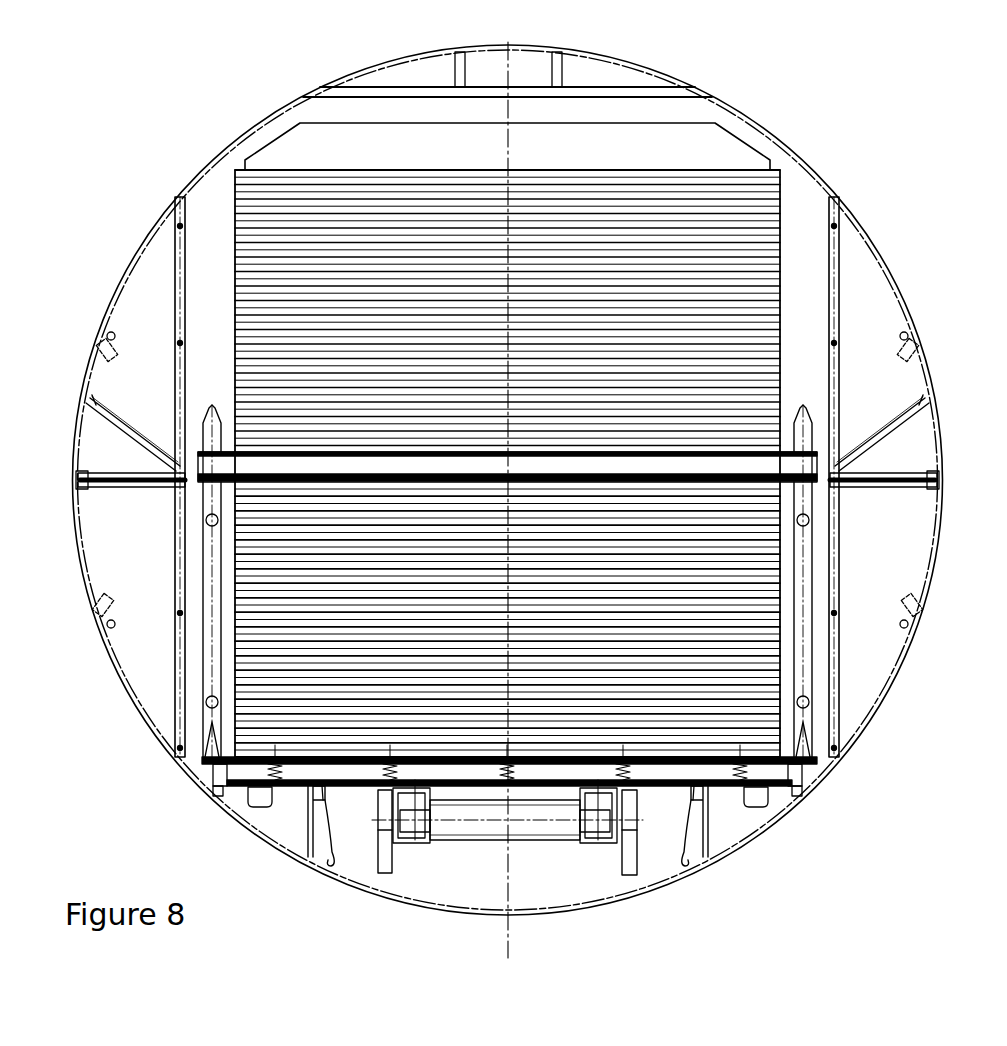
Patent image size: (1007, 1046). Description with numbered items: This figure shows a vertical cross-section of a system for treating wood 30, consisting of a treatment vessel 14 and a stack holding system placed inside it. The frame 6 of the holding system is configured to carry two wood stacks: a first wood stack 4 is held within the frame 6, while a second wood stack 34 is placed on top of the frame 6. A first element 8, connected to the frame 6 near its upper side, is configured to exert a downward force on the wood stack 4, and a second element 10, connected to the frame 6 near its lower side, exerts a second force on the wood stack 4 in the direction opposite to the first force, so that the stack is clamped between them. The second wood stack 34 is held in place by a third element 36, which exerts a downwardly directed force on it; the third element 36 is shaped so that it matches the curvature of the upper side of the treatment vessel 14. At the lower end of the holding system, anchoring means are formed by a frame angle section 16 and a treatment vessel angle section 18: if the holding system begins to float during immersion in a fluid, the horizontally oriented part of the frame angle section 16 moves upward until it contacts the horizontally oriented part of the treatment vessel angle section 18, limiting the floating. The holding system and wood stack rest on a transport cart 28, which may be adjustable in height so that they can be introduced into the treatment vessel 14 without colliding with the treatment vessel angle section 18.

The system for treating wood 30 is at (918, 77).
The treatment vessel 14 is at (895, 292).
The third element 36 is at (723, 160).
The second wood stack 34 is at (775, 226).
The frame 6 is at (807, 463).
The first element 8 is at (207, 483).
The wood stack 4 is at (253, 740).
The second element 10 is at (270, 773).
The treatment vessel angle section 18 is at (305, 786).
The frame angle section 16 is at (333, 870).
The transport cart 28 is at (563, 837).